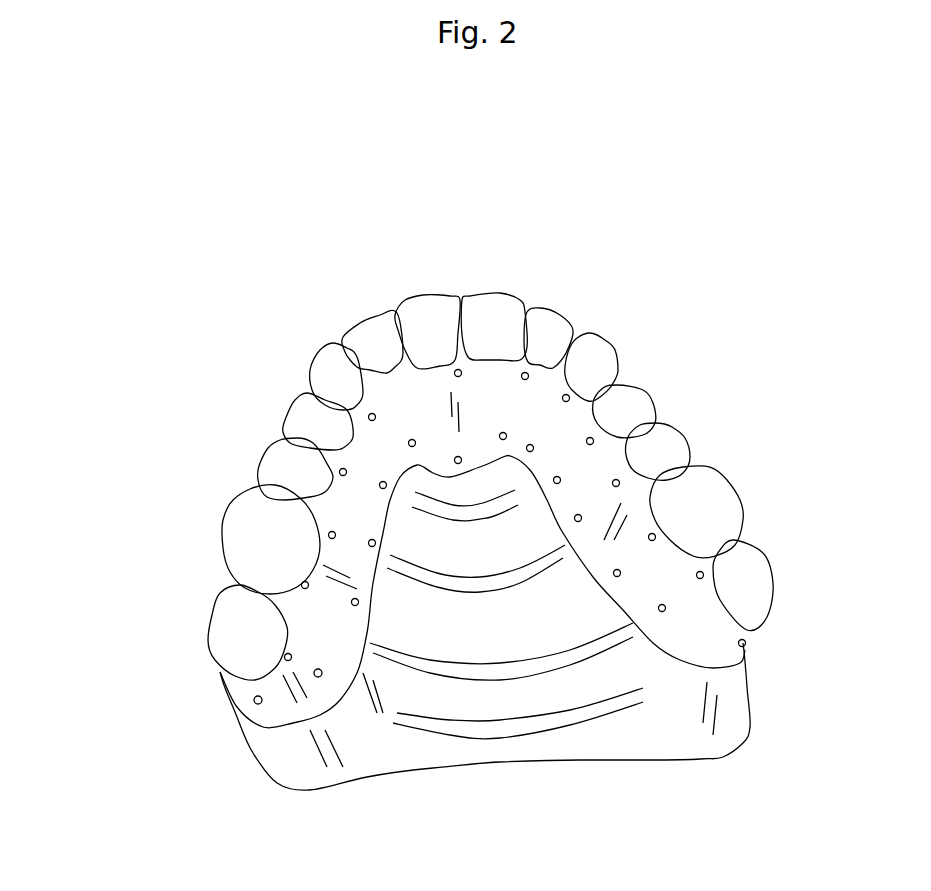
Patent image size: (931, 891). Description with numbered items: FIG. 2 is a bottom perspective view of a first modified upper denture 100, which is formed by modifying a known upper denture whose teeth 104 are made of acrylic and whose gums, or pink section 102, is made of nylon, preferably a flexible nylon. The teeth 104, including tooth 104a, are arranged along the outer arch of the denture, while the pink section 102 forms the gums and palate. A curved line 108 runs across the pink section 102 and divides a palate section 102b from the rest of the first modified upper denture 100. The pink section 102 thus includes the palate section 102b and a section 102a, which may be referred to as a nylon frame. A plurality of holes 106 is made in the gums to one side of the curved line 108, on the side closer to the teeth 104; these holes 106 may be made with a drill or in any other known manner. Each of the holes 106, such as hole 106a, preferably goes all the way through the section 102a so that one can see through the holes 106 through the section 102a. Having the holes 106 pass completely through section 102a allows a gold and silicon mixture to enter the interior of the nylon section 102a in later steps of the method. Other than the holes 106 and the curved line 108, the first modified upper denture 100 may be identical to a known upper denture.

The first modified upper denture 100 is at (633, 347).
The pink section 102 is at (507, 563).
The section 102a is at (437, 419).
The palate section 102b is at (564, 640).
The teeth 104 is at (307, 412).
The tooth 104a is at (247, 547).
The holes 106 is at (254, 698).
The hole 106a is at (319, 669).
The curved line 108 is at (370, 583).